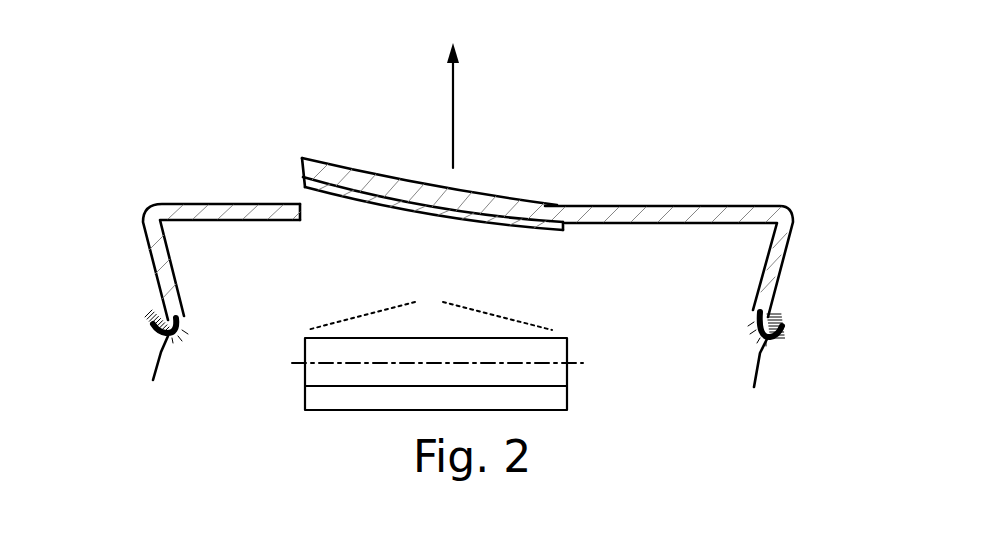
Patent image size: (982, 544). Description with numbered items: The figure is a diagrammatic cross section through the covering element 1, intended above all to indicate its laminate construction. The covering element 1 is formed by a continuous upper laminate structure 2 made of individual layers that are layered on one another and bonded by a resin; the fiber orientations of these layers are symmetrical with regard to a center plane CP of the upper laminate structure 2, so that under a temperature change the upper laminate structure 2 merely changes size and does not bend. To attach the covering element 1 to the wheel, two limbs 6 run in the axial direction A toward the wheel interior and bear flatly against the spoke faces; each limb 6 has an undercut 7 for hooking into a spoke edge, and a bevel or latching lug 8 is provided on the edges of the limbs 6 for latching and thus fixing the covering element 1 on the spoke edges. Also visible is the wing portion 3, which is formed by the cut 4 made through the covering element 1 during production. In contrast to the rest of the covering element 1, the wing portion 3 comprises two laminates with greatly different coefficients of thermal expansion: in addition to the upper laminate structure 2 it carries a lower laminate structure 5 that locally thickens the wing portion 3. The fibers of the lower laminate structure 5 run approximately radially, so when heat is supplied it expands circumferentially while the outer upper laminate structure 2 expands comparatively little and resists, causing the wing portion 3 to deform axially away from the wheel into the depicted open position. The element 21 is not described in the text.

The covering element 1 is at (669, 127).
The upper laminate structure 2 is at (215, 204).
The wing portion 3 is at (567, 250).
The cut 4 is at (302, 162).
The lower laminate structure 5 is at (568, 230).
The limbs 6 is at (150, 260).
The undercut 7 is at (187, 323).
The latching lug 8 is at (158, 326).
The wall element 21 is at (456, 383).
The axial direction A is at (465, 104).
The center plane CP is at (458, 373).